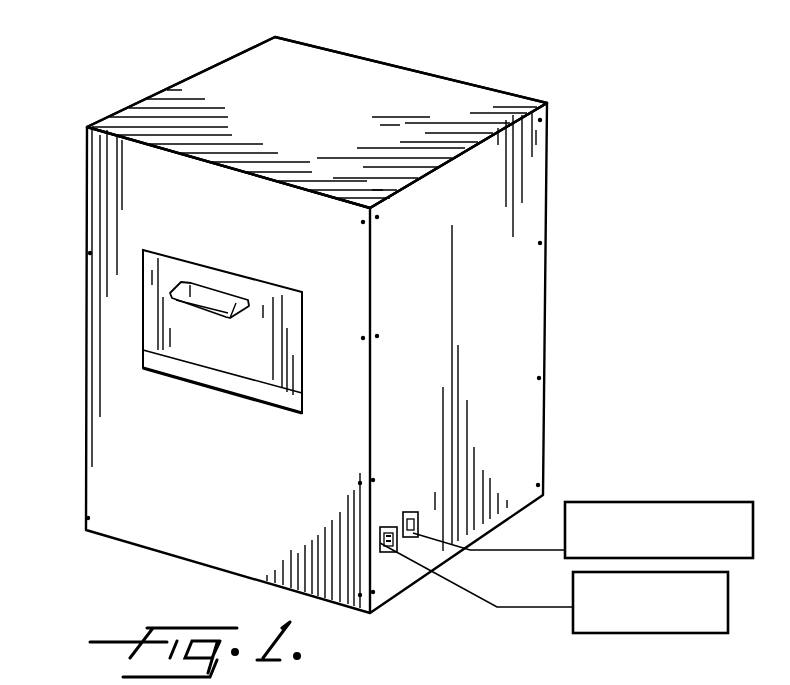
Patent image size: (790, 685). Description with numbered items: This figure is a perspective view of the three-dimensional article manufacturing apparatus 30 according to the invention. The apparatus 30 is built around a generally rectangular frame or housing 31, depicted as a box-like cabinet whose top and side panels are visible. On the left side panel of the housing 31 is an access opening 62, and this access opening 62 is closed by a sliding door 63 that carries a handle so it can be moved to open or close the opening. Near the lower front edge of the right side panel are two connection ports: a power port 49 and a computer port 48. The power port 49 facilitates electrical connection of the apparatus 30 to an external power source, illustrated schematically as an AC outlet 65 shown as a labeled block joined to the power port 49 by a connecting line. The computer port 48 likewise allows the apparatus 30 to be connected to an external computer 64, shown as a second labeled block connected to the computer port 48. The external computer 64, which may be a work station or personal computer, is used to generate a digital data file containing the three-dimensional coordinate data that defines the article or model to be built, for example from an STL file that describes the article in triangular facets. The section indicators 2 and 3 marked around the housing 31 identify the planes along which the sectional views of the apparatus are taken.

The three-dimensional article manufacturing apparatus 30 is at (548, 50).
The frame or housing 31 is at (402, 80).
The section line 2- 2 is at (215, 55).
The section line 3- 3 is at (432, 87).
The access opening 62 is at (187, 366).
The sliding door 63 is at (150, 312).
The computer port 48 is at (415, 510).
The power port 49 is at (394, 526).
The external computer 64 is at (625, 502).
The AC outlet 65 is at (660, 633).